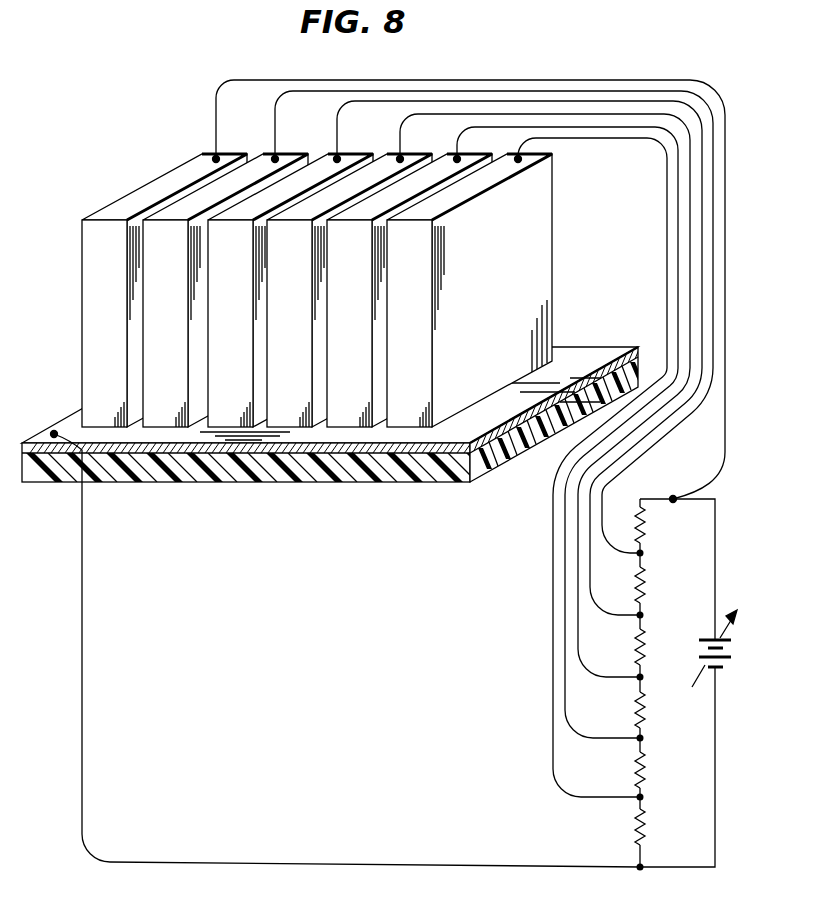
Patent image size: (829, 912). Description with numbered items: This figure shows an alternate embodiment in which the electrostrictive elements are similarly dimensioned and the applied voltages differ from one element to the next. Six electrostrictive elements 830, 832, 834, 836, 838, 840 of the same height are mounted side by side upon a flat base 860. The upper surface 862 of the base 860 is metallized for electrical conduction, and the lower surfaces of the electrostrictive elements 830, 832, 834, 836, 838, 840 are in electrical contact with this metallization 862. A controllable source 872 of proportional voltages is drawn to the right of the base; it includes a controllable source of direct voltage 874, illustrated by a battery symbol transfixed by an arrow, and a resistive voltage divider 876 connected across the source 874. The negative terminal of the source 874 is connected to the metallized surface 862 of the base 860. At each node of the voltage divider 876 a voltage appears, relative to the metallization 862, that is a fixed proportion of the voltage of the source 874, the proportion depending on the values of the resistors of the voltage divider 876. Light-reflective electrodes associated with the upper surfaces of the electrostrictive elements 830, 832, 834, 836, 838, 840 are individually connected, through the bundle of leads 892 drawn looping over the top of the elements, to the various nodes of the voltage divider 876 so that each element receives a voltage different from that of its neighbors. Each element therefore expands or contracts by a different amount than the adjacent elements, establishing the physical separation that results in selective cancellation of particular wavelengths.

The electrostrictive element 830 is at (83, 321).
The electrostrictive element 832 is at (163, 420).
The electrostrictive element 834 is at (328, 160).
The electrostrictive element 836 is at (287, 422).
The electrostrictive element 838 is at (345, 423).
The electrostrictive element 840 is at (408, 423).
The flat base 860 is at (39, 472).
The upper surface 862 is at (637, 346).
The controllable source of proportional voltages 872 is at (754, 502).
The controllable source of direct voltage 874 is at (715, 622).
The resistive voltage divider 876 is at (685, 655).
The lead wires 892 is at (601, 82).